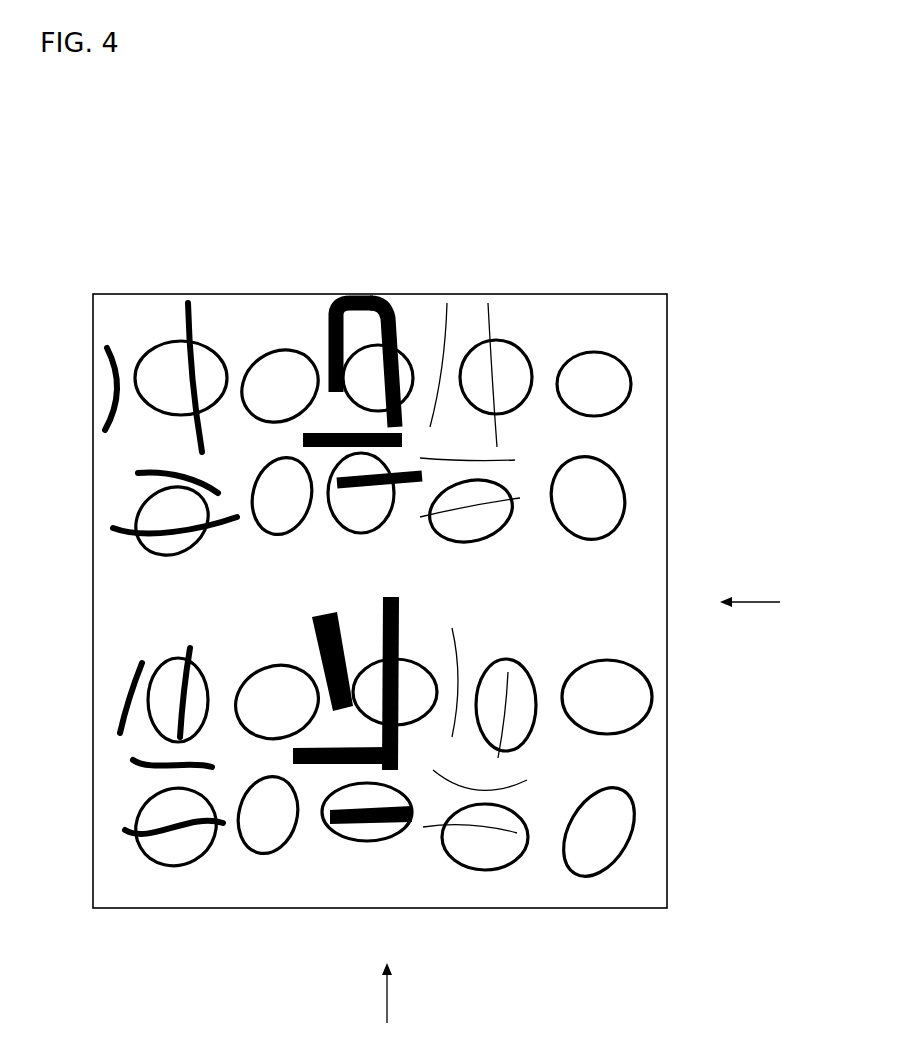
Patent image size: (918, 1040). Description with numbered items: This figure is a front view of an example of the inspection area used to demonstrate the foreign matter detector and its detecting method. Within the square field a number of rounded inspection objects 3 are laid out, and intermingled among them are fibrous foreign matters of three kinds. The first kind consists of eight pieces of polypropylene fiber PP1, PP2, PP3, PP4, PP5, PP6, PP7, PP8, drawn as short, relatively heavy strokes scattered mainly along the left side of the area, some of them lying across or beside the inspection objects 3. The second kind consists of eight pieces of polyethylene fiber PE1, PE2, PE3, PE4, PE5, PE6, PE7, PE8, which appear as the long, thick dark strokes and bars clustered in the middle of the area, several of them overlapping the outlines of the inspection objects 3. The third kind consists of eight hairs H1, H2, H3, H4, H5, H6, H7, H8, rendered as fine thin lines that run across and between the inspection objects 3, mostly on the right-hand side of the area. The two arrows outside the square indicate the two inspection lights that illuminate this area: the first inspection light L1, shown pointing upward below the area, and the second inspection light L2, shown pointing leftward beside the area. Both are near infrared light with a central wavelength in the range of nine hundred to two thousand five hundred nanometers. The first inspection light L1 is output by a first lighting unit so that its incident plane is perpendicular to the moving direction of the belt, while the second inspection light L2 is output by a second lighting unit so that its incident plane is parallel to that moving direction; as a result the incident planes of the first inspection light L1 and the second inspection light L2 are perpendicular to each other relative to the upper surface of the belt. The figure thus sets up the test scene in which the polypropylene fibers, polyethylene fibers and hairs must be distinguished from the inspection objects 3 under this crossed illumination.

The inspection object 3 is at (632, 380).
The polypropylene fiber PP1 is at (121, 358).
The polypropylene fiber PP2 is at (190, 318).
The polypropylene fiber PP3 is at (145, 475).
The polypropylene fiber PP4 is at (113, 528).
The polypropylene fiber PP5 is at (138, 692).
The polypropylene fiber PP6 is at (188, 655).
The polypropylene fiber PP7 is at (140, 765).
The polypropylene fiber PP8 is at (130, 832).
The polyethylene fiber PE1 is at (327, 320).
The polyethylene fiber PE2 is at (400, 318).
The polyethylene fiber PE3 is at (313, 433).
The polyethylene fiber PE4 is at (333, 480).
The polyethylene fiber PE5 is at (320, 688).
The polyethylene fiber PE6 is at (405, 733).
The polyethylene fiber PE7 is at (313, 767).
The polyethylene fiber PE8 is at (357, 823).
The hair H1 is at (447, 317).
The hair H2 is at (497, 323).
The hair H3 is at (513, 456).
The hair H4 is at (497, 507).
The hair H5 is at (463, 658).
The hair H6 is at (510, 693).
The hair H7 is at (528, 781).
The hair H8 is at (495, 828).
The first inspection light L1 is at (388, 995).
The second inspection light L2 is at (757, 603).